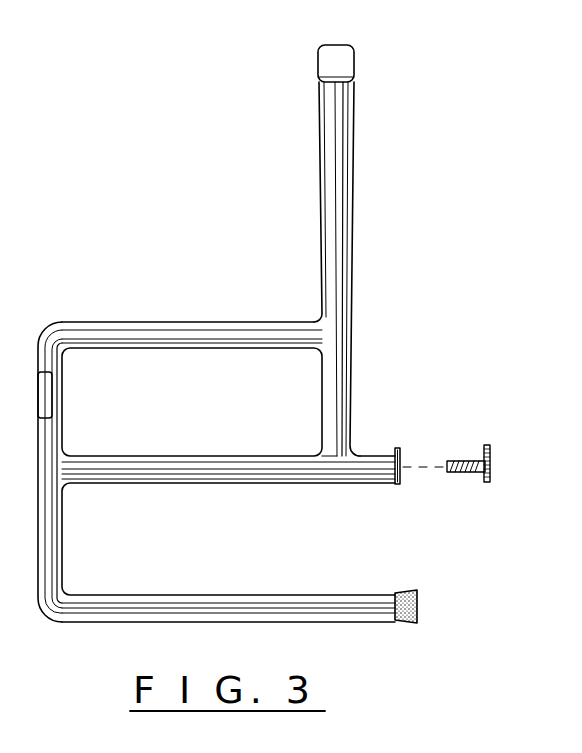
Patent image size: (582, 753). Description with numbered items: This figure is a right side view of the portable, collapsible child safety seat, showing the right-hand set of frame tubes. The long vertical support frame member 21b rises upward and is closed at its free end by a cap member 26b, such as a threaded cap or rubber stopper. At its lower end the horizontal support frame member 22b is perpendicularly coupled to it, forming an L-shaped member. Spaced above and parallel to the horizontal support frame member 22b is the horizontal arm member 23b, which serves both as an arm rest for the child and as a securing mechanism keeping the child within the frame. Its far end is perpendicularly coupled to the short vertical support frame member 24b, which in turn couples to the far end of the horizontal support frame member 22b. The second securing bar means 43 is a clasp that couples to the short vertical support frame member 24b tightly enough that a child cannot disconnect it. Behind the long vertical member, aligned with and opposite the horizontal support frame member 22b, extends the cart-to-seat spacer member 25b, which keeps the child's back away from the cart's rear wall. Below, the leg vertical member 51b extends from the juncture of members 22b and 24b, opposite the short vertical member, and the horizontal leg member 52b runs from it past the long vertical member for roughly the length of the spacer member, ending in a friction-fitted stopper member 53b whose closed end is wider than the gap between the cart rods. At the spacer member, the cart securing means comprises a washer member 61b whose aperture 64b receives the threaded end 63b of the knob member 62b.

The second parallel long vertical support frame member 21b is at (320, 163).
The cap member 26b is at (318, 63).
The second parallel horizontal arm member 23b is at (175, 322).
The second parallel short vertical support frame member 24b is at (37, 365).
The second parallel horizontal support frame member 22b is at (173, 457).
The second securing bar means 43 is at (47, 396).
The second cart-to-seat spacer member 25b is at (375, 454).
The second parallel leg vertical member 51b is at (63, 537).
The second parallel horizontal leg member 52b is at (210, 597).
The second stopper member 53b is at (417, 603).
The second attaching washer member 61b is at (396, 484).
The aperture 64b is at (399, 470).
The threaded end 63b is at (458, 460).
The knob member 62b is at (488, 450).